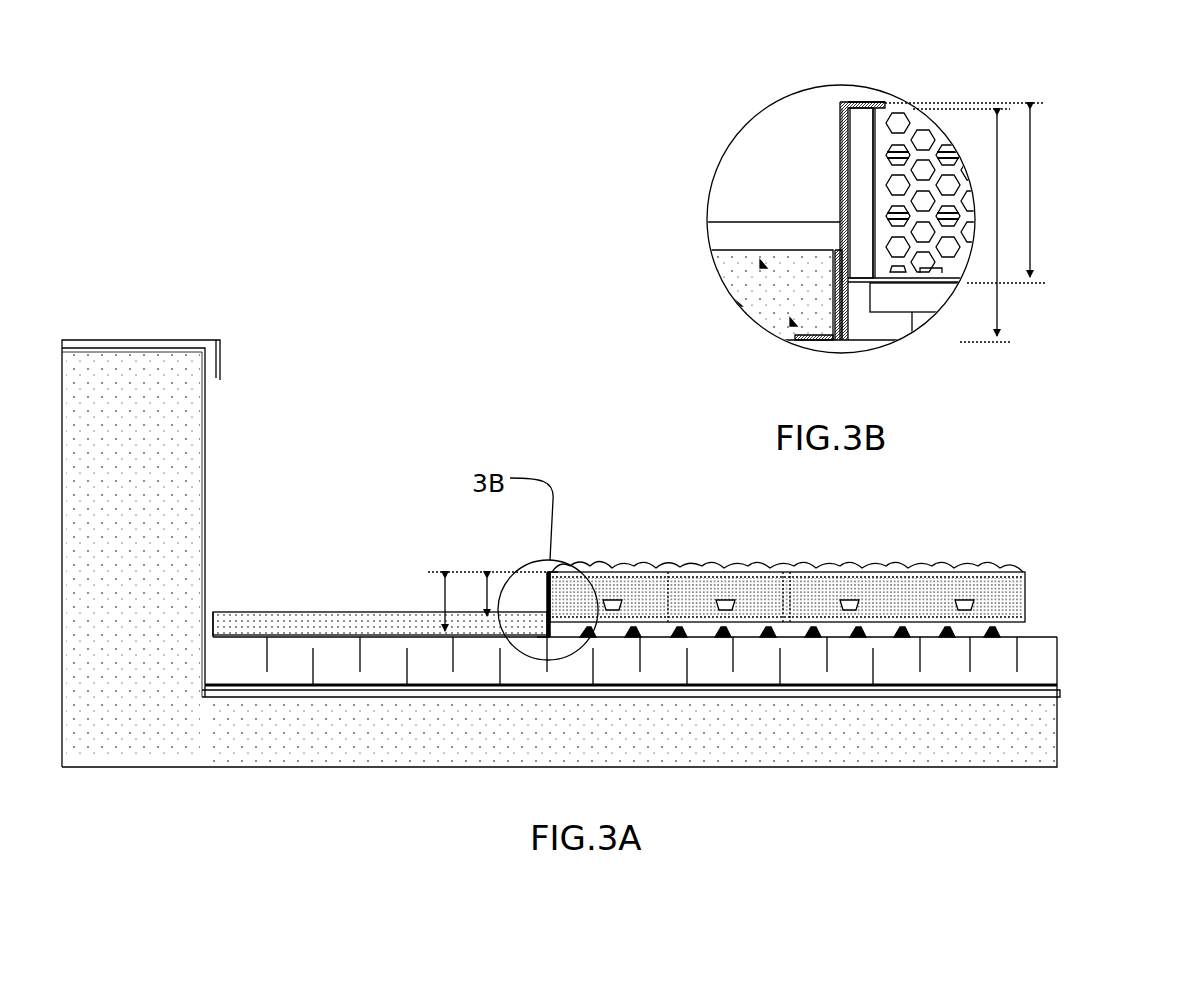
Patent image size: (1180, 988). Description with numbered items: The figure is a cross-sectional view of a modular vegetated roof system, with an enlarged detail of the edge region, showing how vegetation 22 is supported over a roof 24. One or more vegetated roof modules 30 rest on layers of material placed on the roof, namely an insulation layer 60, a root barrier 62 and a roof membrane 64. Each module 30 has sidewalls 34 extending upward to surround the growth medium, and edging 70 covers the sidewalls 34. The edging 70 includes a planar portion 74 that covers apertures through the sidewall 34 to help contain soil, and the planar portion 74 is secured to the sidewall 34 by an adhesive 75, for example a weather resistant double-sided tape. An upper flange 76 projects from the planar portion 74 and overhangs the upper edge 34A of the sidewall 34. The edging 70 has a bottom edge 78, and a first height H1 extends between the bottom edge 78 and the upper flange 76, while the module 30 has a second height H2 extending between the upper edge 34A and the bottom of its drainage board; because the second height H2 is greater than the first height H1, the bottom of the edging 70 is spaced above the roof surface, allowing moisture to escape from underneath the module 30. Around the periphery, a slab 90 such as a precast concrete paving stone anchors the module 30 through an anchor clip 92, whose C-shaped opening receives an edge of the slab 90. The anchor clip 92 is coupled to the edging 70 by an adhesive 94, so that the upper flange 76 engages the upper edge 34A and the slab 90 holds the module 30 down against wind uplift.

In FIG. 3A, the vegetation 22 is at (723, 563).
In FIG. 3A, the roof 24 is at (1042, 728).
In FIG. 3A, the vegetated roof module 30 is at (613, 580).
In FIG. 3B, the sidewall 34 is at (838, 150).
In FIG. 3B, the upper edge of the sidewall 34A is at (845, 100).
In FIG. 3A, the insulation layer 60 is at (1042, 655).
In FIG. 3A, the root barrier 62 is at (1040, 683).
In FIG. 3A, the roof membrane 64 is at (1062, 690).
In FIG. 3B, the edging 70 is at (828, 120).
In FIG. 3B, the planar portion 74 is at (838, 178).
In FIG. 3B, the adhesive 75 is at (838, 207).
In FIG. 3B, the upper flange 76 is at (878, 101).
In FIG. 3B, the bottom edge 78 is at (848, 290).
In FIG. 3A, the slab 90 is at (292, 623).
In FIG. 3B, the slab 90 is at (715, 262).
In FIG. 3A, the anchor clip 92 is at (540, 583).
In FIG. 3B, the anchor clip 92 is at (793, 250).
In FIG. 3B, the adhesive 94 is at (840, 338).
In FIG. 3A, the first height H1 is at (487, 572).
In FIG. 3B, the first height H1 is at (1030, 162).
In FIG. 3A, the second height H2 is at (445, 590).
In FIG. 3B, the second height H2 is at (997, 300).